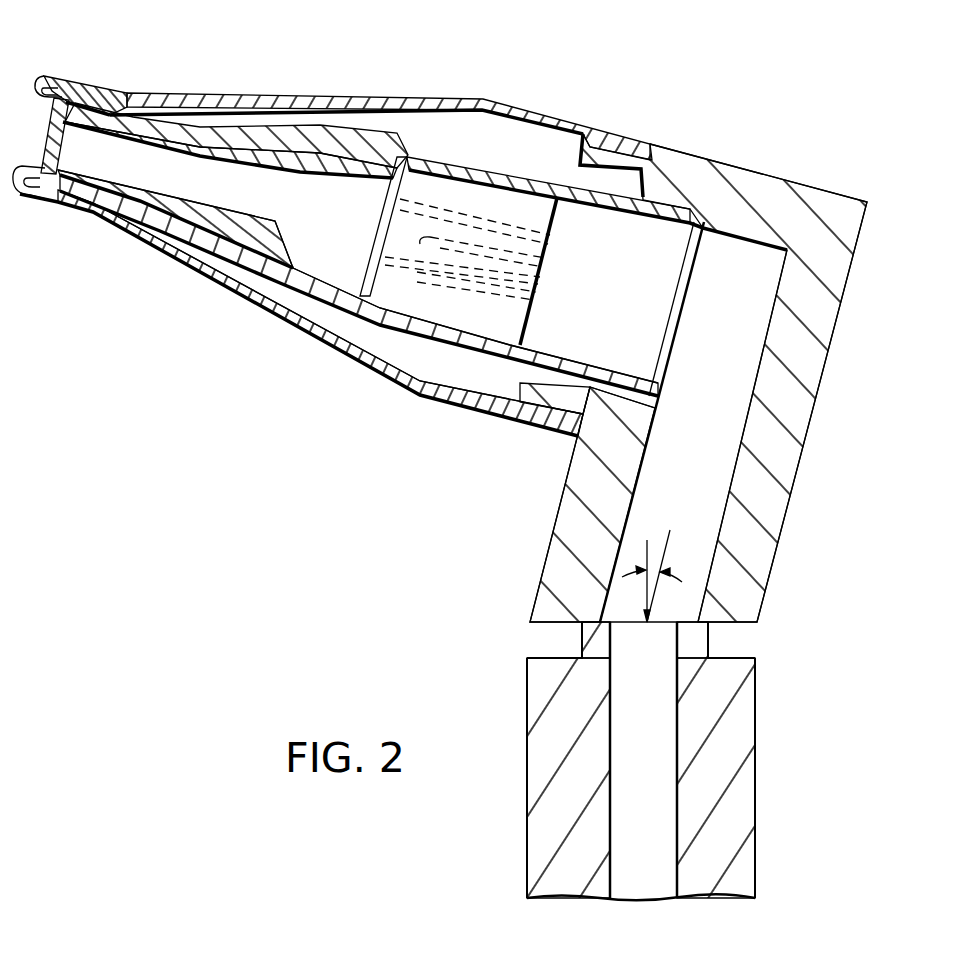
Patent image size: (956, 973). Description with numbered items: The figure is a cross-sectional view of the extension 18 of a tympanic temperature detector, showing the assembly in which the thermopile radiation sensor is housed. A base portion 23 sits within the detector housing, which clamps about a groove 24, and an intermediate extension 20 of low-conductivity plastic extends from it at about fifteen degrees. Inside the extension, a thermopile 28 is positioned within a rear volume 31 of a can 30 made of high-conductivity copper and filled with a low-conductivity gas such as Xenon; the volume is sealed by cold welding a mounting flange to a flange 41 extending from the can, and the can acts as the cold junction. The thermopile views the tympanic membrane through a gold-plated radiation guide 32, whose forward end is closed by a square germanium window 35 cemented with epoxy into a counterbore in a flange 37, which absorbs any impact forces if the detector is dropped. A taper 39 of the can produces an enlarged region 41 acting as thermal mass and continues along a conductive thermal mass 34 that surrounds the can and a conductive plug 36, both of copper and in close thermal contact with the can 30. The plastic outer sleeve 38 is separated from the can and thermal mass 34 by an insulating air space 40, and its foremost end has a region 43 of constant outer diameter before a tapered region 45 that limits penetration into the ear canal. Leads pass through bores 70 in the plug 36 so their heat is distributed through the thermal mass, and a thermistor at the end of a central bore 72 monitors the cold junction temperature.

The extension 18 is at (548, 92).
The intermediate extension portion 20 is at (800, 492).
The base portion 23 is at (757, 770).
The groove 24 is at (727, 655).
The thermopile 28 is at (327, 203).
The can 30 is at (92, 210).
The rear volume 31 is at (376, 215).
The radiation guide 32 is at (210, 203).
The conductive thermal mass 34 is at (460, 152).
The germanium window 35 is at (61, 121).
The conductive plug 36 is at (559, 226).
The flange 37 is at (97, 108).
The outer sleeve 38 is at (453, 407).
The taper 39 is at (201, 125).
The insulating air space 40 is at (555, 148).
The flange of the can / enlarged region 41 is at (282, 140).
The region of constant outer diameter 43 is at (93, 203).
The tapered region 45 is at (353, 357).
The bores 70 is at (538, 296).
The central bore 72 is at (545, 270).